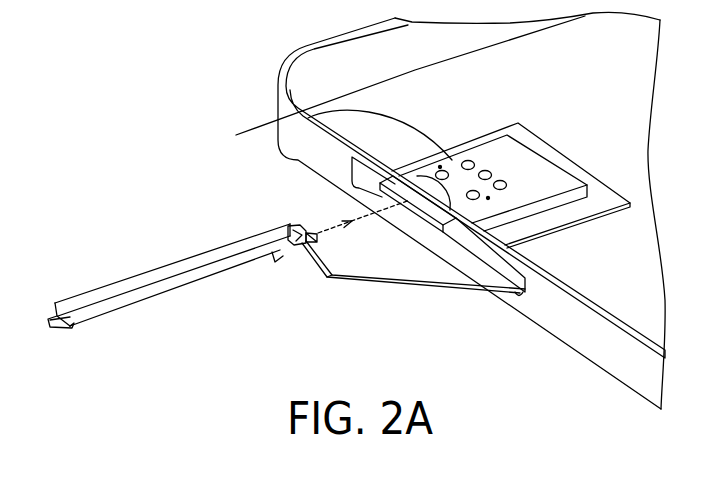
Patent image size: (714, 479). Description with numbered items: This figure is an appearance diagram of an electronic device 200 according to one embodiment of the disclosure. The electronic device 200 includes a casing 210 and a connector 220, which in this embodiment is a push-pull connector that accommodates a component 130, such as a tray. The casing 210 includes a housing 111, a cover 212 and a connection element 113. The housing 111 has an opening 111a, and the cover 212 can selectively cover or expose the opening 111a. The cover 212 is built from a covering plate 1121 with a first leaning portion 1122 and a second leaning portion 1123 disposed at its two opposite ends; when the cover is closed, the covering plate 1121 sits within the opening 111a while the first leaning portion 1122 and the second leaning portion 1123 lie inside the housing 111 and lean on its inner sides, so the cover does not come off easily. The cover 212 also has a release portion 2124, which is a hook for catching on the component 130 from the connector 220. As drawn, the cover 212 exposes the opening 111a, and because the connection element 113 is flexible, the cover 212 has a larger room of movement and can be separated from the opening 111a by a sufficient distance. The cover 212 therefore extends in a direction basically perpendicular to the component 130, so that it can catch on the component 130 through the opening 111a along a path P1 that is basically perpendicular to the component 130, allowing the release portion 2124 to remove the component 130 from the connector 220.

The electronic device 200 is at (263, 42).
The connector 220 is at (432, 187).
The component 130 is at (305, 164).
The housing 111 is at (450, 244).
The opening 111a is at (465, 241).
The casing 210 is at (281, 279).
The cover 212 is at (163, 276).
The covering plate 1121 is at (173, 272).
The first leaning portion 1122 is at (48, 317).
The second leaning portion 1123 is at (290, 234).
The release portion 2124 is at (306, 233).
The connection element 113 is at (483, 331).
The path P1 is at (364, 227).